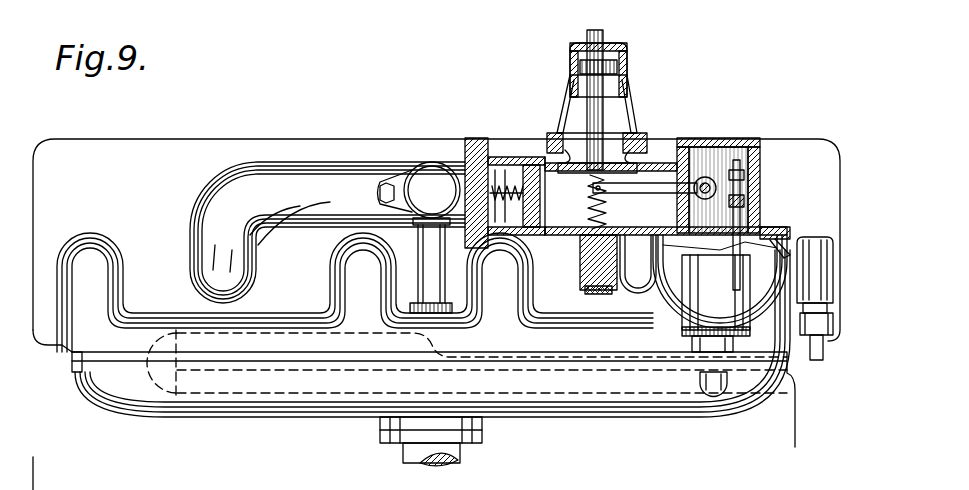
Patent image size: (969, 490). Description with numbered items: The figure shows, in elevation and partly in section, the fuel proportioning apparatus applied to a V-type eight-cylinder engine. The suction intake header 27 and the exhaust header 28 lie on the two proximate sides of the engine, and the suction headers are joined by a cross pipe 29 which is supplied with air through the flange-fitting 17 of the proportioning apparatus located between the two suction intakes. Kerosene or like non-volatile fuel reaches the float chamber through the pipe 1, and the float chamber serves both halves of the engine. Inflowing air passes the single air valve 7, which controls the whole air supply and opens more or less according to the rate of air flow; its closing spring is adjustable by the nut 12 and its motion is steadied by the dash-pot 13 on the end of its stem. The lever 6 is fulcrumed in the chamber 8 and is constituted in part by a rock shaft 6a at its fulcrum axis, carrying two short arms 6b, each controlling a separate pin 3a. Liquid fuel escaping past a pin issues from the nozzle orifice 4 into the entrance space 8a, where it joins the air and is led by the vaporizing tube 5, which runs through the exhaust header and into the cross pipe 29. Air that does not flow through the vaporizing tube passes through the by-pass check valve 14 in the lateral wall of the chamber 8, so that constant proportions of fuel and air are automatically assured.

The pipe 1 is at (815, 362).
The pin 3a is at (752, 234).
The nozzle orifice 4 is at (720, 293).
The vaporizing tube 5 is at (416, 245).
The lever 6 is at (655, 180).
The rock shaft 6a is at (708, 180).
The short arms 6b is at (745, 204).
The air valve 7 is at (628, 138).
The chamber 8 is at (611, 202).
The entrance space 8a is at (680, 252).
The nut 12 is at (584, 296).
The dash-pot 13 is at (630, 47).
The by-pass check valve 14 is at (515, 160).
The flange-fitting 17 is at (481, 137).
The suction intake header 27 is at (328, 162).
The exhaust header 28 is at (285, 300).
The cross pipe 29 is at (420, 165).